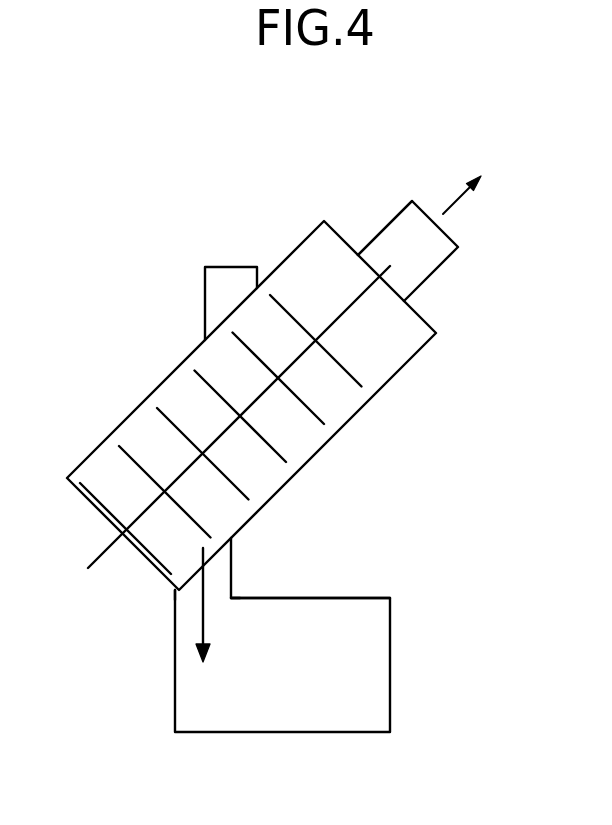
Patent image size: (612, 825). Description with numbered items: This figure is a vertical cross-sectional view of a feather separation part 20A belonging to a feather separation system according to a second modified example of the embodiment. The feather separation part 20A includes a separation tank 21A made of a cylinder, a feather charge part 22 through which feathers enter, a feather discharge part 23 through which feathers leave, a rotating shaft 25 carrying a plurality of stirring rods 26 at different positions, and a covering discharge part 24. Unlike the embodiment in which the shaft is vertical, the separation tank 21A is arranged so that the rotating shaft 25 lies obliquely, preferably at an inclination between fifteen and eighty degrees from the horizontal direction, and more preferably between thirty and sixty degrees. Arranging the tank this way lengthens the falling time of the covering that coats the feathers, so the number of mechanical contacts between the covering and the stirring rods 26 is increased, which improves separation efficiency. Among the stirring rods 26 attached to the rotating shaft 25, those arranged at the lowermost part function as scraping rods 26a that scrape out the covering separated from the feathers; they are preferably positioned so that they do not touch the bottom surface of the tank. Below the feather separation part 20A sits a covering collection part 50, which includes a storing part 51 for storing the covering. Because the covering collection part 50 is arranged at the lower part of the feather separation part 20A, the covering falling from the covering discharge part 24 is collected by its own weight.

The feather separation part 20A is at (373, 142).
The separation tank 21A is at (393, 353).
The feather charge part 22 is at (229, 267).
The feather discharge part 23 is at (398, 212).
The covering discharge part 24 is at (217, 557).
The rotating shaft 25 is at (365, 291).
The stirring rods 26 is at (328, 356).
The scraping rods 26a is at (157, 572).
The covering collection part 50 is at (402, 664).
The storing part 51 is at (352, 597).